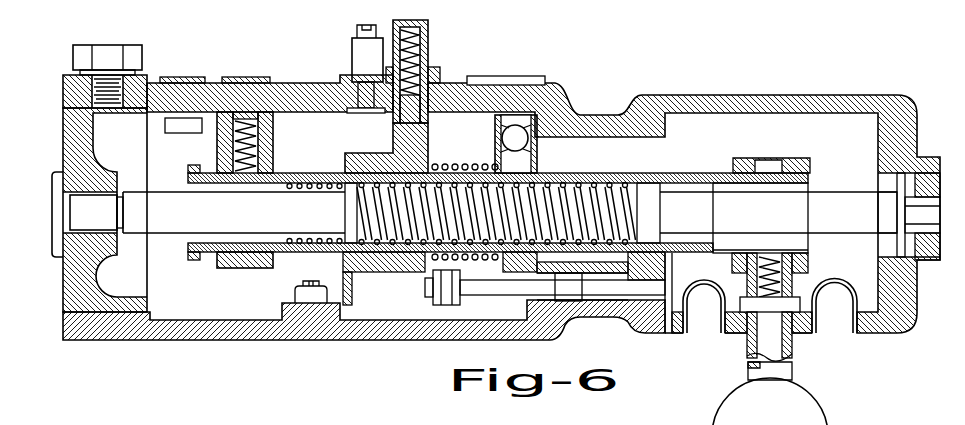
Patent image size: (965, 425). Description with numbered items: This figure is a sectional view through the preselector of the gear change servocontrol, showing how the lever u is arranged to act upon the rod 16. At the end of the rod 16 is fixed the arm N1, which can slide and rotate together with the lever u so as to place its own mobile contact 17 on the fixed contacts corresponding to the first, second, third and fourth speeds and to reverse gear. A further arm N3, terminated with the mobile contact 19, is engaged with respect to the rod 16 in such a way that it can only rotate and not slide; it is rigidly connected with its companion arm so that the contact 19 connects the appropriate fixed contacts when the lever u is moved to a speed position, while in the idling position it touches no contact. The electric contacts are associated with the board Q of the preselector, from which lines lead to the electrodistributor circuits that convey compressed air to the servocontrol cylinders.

The board Q is at (496, 182).
The mobile contact 17 is at (258, 112).
The mobile contact 19 is at (427, 120).
The arm N3 is at (427, 138).
The arm N1 is at (240, 268).
The rod 16 is at (693, 178).
The lever u is at (787, 366).